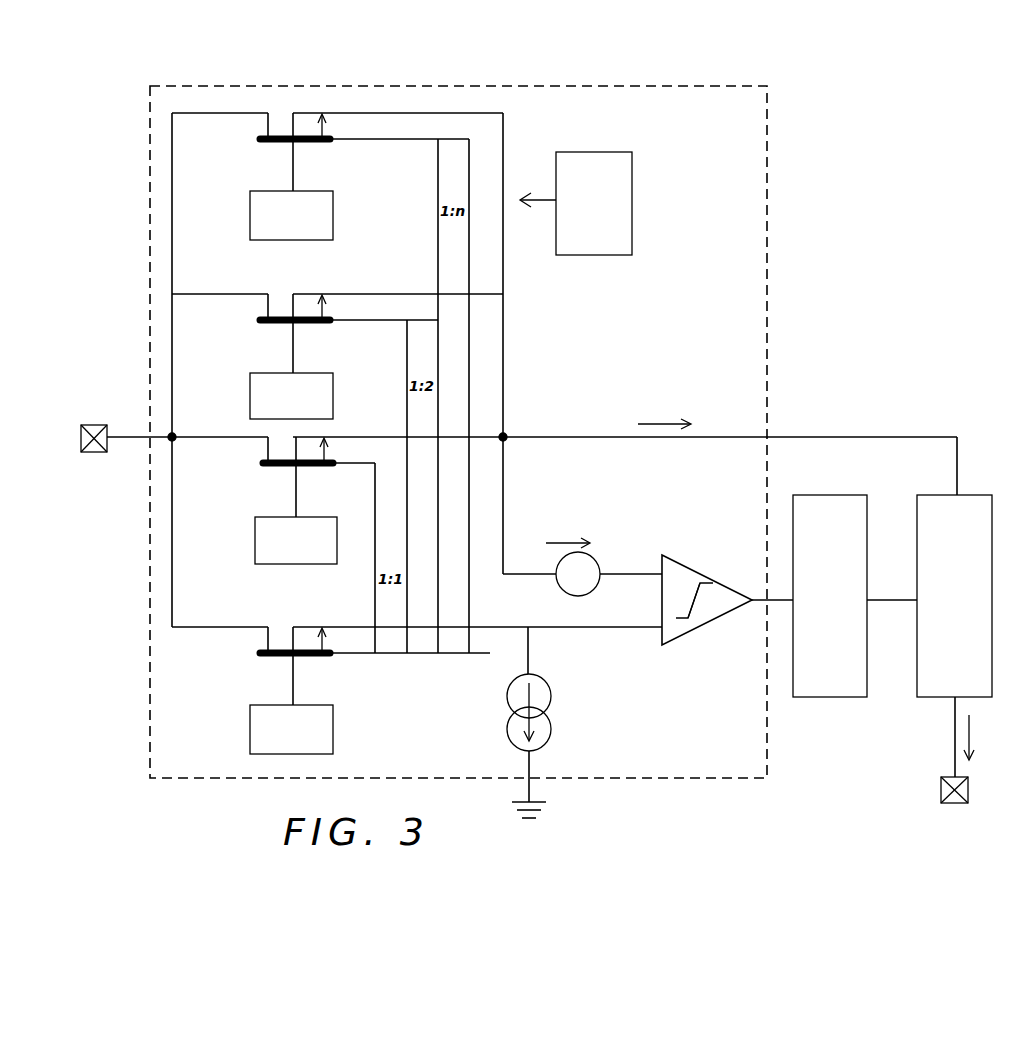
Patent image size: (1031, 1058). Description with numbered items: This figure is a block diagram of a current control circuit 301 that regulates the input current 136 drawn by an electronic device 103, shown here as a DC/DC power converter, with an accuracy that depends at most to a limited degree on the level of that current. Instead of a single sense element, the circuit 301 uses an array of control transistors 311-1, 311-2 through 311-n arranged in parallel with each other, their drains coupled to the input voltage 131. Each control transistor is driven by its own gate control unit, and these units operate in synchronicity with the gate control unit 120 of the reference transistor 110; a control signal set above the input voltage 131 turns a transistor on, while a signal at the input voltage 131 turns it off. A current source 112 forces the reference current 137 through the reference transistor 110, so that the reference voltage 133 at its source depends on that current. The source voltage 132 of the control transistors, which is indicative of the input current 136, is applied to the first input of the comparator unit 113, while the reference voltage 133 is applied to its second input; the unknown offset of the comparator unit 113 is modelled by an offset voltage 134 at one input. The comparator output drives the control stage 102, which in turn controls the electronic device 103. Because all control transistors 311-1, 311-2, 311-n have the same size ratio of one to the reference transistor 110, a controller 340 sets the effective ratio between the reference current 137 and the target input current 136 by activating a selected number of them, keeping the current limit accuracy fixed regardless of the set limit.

The current control circuit 301 is at (150, 744).
The control transistor M1_n 311-n is at (260, 123).
The control transistor M1_2 311-2 is at (260, 304).
The control transistor M1_1 311-1 is at (264, 448).
The reference transistor M0 110 is at (262, 638).
The gate control unit 120 is at (250, 733).
The input voltage Vin 131 is at (89, 423).
The source voltage vsw 132 is at (546, 423).
The reference voltage vref 133 is at (580, 628).
The offset voltage Vos 134 is at (566, 528).
The input current Iin 136 is at (659, 408).
The comparator unit 113 is at (693, 568).
The controller 340 is at (578, 152).
The current source 112 is at (508, 708).
The reference current Iref 137 is at (602, 710).
The control stage 102 is at (815, 698).
The electronic device 103 is at (942, 495).